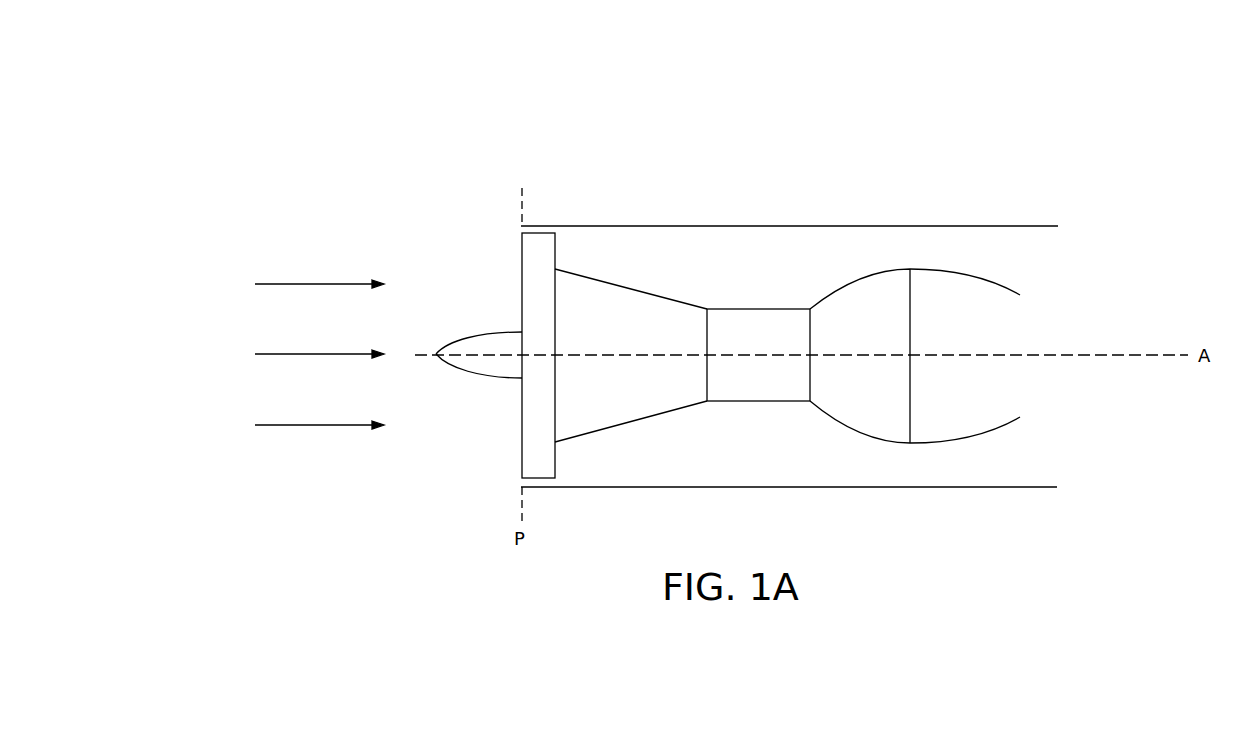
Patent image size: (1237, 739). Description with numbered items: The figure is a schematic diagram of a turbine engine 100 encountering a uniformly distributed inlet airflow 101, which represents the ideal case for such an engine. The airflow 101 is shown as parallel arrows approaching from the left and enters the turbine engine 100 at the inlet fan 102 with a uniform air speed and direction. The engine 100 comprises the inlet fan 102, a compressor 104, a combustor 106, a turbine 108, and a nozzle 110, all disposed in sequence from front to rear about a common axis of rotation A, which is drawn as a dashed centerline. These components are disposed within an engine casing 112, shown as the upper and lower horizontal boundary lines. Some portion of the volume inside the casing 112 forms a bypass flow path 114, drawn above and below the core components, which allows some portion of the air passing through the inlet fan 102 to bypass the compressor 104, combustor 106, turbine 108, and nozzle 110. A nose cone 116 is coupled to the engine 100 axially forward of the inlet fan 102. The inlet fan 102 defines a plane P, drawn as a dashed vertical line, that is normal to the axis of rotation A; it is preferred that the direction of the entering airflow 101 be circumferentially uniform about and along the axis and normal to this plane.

The turbine engine 100 is at (1003, 117).
The uniformly distributed inlet airflow 101 is at (287, 354).
The inlet fan 102 is at (543, 247).
The compressor 104 is at (626, 328).
The combustor 106 is at (779, 338).
The turbine 108 is at (880, 337).
The nozzle 110 is at (984, 329).
The engine casing 112 is at (828, 226).
The bypass flow path 114 is at (769, 273).
The nose cone 116 is at (490, 365).